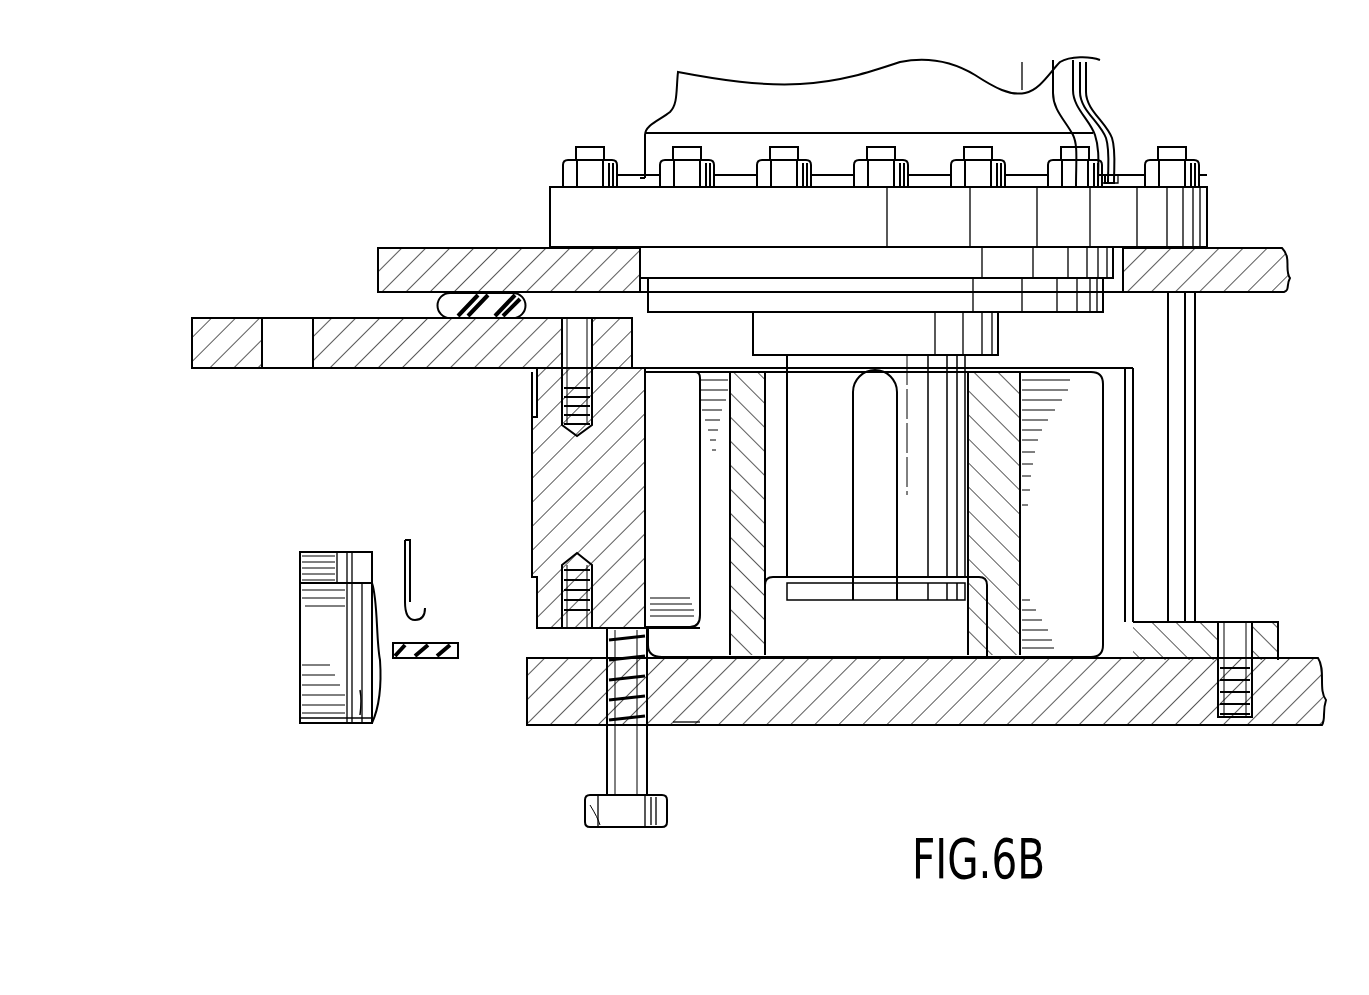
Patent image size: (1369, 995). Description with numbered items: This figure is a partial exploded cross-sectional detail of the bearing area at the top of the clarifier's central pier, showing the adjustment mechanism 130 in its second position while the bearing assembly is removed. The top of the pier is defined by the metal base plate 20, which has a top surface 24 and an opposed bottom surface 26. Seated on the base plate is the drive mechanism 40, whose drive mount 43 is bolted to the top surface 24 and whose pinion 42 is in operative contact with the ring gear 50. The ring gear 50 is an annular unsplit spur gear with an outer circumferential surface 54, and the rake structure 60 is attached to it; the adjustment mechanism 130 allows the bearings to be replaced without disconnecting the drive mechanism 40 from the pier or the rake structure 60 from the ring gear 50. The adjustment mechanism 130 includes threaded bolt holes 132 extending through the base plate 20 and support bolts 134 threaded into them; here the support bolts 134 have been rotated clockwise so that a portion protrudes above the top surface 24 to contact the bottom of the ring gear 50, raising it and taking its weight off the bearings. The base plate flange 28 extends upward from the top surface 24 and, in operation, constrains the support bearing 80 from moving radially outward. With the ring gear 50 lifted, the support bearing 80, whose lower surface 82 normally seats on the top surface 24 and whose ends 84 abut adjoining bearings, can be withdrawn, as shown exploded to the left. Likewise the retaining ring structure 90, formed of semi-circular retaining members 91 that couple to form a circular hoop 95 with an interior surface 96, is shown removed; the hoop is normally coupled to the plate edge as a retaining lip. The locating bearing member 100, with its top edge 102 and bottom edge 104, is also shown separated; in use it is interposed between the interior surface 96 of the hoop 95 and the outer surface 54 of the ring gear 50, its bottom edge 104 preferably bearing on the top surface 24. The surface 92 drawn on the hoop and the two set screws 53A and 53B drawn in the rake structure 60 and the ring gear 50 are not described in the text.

The base plate 20 is at (897, 700).
The top surface 24 is at (672, 660).
The bottom surface 26 is at (673, 724).
The base plate flange 28 is at (603, 628).
The drive mechanism 40 is at (1133, 187).
The pinion 42 is at (1047, 388).
The drive mount 43 is at (1237, 248).
The ring gear 50 is at (538, 498).
The set screw 53A is at (530, 385).
The set screw 53B is at (548, 600).
The outer circumferential surface 54 is at (542, 437).
The rake structure 60 is at (243, 328).
The support bearing 80 is at (393, 650).
The lower surface 82 is at (432, 660).
The ends 84 is at (451, 656).
The retaining ring structure 90 is at (330, 556).
The retaining member 91 is at (315, 713).
The inner surface 92 is at (365, 692).
The circular hoop 95 is at (309, 641).
The interior surface 96 is at (360, 593).
The locating bearing member 100 is at (429, 557).
The top edge 102 is at (404, 540).
The bottom edge 104 is at (428, 614).
The adjustment mechanism 130 is at (522, 752).
The threaded bolt hole 132 is at (605, 695).
The support bolt 134 is at (597, 820).